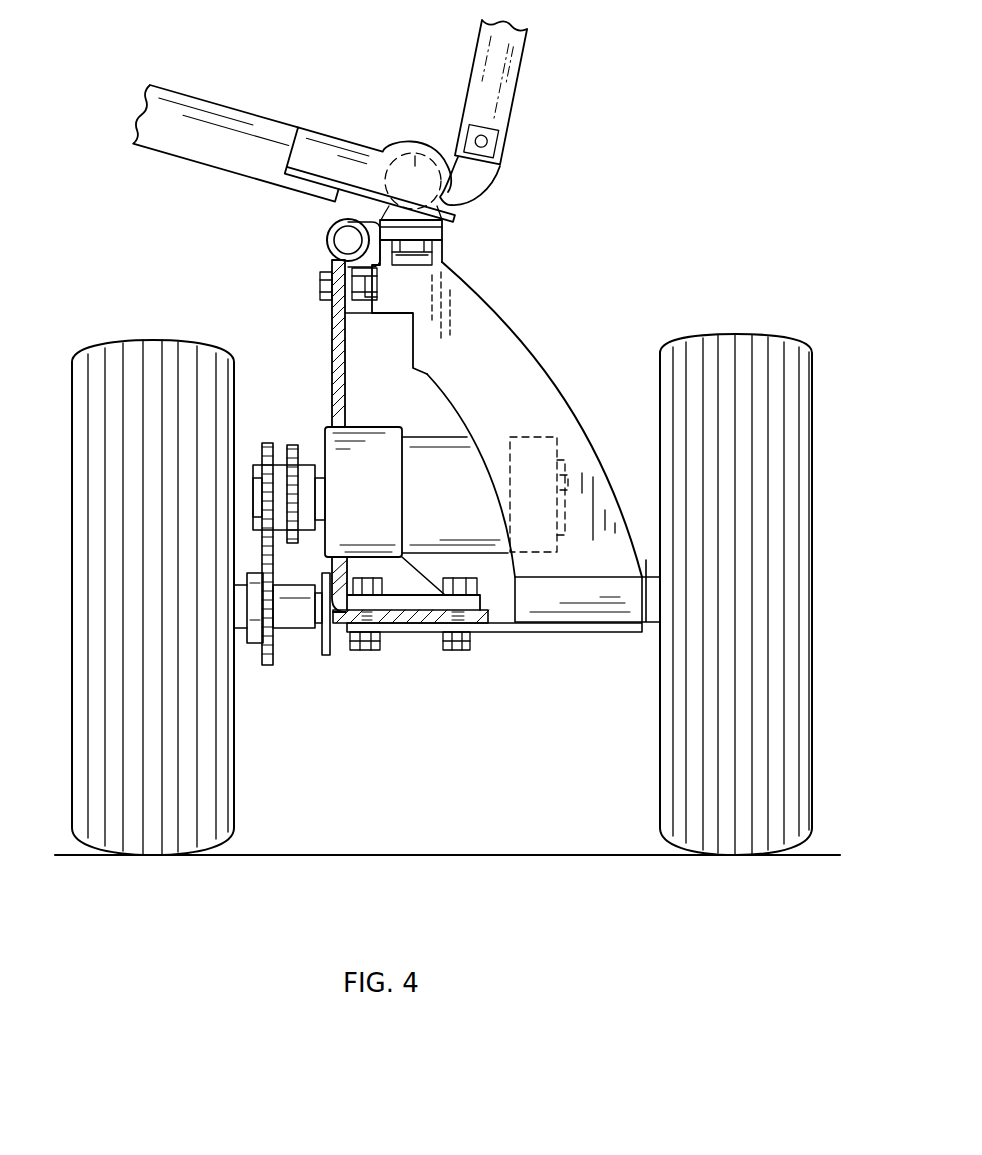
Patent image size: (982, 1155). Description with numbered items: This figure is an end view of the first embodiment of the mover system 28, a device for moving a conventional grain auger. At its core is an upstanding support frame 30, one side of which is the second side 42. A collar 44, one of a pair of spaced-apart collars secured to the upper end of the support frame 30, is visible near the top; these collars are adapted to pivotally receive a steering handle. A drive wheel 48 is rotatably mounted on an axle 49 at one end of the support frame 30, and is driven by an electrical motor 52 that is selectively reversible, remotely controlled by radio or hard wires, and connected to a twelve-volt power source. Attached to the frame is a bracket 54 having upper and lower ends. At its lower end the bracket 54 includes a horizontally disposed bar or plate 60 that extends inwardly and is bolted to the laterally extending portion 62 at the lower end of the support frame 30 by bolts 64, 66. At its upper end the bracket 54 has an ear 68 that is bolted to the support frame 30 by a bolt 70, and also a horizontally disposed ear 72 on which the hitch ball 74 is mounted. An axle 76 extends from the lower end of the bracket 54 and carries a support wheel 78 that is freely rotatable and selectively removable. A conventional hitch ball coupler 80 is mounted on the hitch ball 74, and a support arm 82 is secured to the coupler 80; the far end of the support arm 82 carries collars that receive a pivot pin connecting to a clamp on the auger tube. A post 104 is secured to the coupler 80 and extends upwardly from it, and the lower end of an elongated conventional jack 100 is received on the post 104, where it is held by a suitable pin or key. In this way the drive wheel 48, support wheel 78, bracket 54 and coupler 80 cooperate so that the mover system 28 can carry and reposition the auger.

The mover system 28 is at (557, 308).
The support frame 30 is at (320, 325).
The second side 42 is at (328, 378).
The collar 44 is at (327, 240).
The drive wheel 48 is at (138, 417).
The axle 49 is at (240, 623).
The electrical motor 52 is at (457, 503).
The bracket 54 is at (570, 365).
The bar or plate 60 is at (555, 634).
The laterally extending portion 62 is at (423, 626).
The bolt 64 is at (370, 652).
The bolt 66 is at (460, 652).
The ear 68 is at (347, 311).
The bolt 70 is at (318, 280).
The horizontally disposed ear 72 is at (437, 233).
The hitch ball 74 is at (417, 148).
The axle 76 is at (652, 612).
The support wheel 78 is at (777, 432).
The hitch ball coupler 80 is at (363, 147).
The support arm 82 is at (232, 98).
The jack 100 is at (506, 98).
The post 104 is at (480, 177).